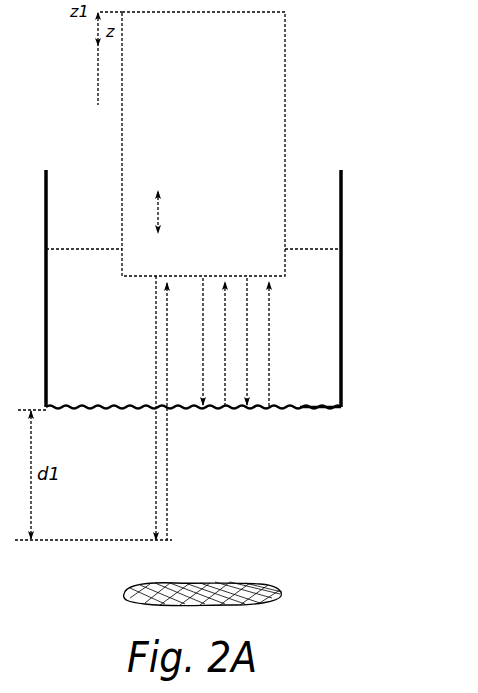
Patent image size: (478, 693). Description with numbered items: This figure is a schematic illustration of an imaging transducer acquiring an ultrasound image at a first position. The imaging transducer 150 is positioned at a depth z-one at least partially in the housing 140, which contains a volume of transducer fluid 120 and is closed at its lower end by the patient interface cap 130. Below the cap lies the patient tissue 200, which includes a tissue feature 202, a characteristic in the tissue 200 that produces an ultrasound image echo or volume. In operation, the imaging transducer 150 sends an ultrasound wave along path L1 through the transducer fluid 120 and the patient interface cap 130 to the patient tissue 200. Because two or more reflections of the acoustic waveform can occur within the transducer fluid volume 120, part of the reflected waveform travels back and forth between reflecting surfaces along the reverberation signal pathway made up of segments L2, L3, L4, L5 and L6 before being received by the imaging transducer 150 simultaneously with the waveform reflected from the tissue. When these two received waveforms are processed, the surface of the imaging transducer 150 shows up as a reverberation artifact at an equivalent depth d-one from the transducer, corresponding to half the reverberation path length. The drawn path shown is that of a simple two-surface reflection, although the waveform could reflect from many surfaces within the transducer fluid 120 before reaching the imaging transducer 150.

The imaging transducer 150 is at (272, 100).
The transducer fluid 120 is at (325, 320).
The housing 140 is at (345, 275).
The patient interface cap 130 is at (325, 410).
The patient tissue 200 is at (262, 455).
The tissue feature 202 is at (282, 595).
The path L1 is at (150, 333).
The reverberation path segment L2 is at (153, 362).
The reverberation path segment L3 is at (207, 340).
The reverberation path segment L4 is at (228, 367).
The reverberation path segment L5 is at (252, 350).
The reverberation path segment L6 is at (281, 344).